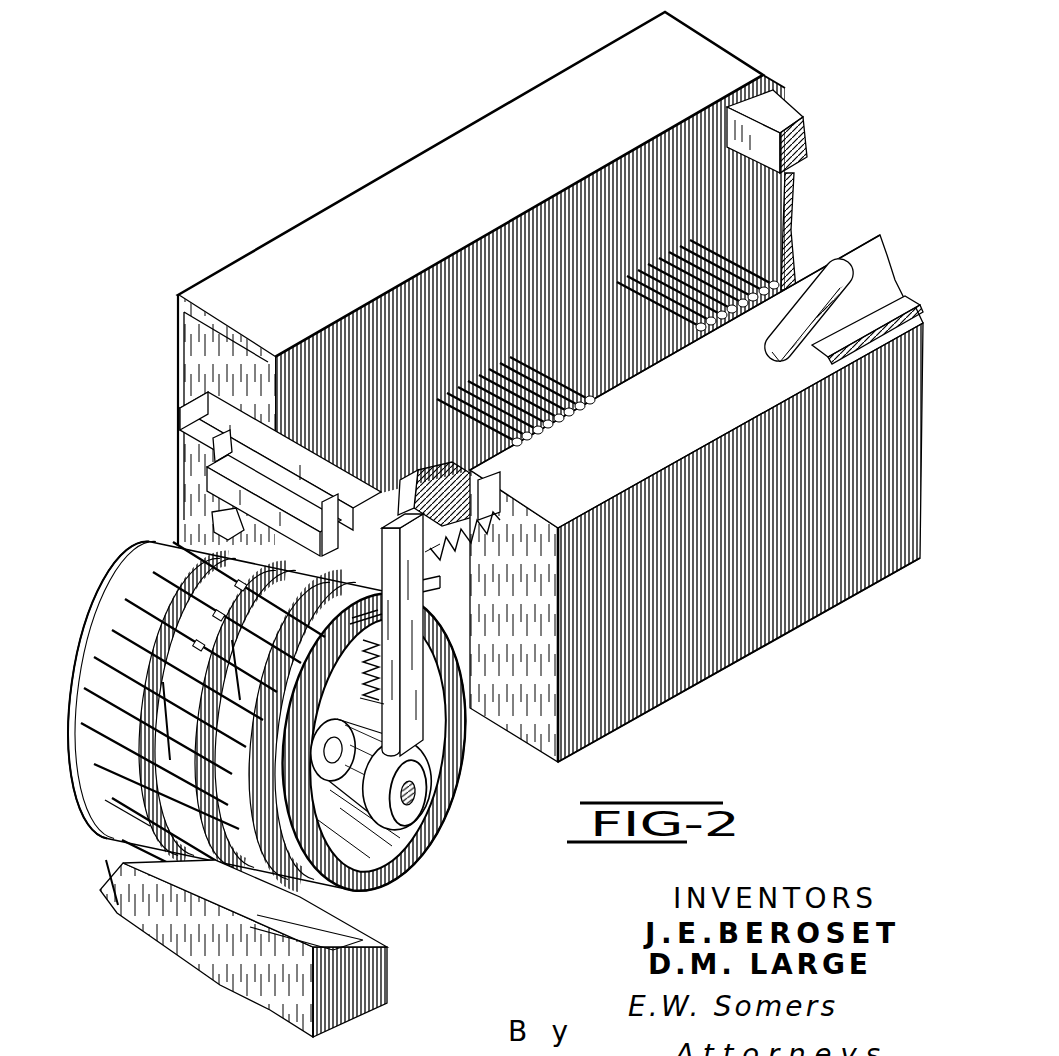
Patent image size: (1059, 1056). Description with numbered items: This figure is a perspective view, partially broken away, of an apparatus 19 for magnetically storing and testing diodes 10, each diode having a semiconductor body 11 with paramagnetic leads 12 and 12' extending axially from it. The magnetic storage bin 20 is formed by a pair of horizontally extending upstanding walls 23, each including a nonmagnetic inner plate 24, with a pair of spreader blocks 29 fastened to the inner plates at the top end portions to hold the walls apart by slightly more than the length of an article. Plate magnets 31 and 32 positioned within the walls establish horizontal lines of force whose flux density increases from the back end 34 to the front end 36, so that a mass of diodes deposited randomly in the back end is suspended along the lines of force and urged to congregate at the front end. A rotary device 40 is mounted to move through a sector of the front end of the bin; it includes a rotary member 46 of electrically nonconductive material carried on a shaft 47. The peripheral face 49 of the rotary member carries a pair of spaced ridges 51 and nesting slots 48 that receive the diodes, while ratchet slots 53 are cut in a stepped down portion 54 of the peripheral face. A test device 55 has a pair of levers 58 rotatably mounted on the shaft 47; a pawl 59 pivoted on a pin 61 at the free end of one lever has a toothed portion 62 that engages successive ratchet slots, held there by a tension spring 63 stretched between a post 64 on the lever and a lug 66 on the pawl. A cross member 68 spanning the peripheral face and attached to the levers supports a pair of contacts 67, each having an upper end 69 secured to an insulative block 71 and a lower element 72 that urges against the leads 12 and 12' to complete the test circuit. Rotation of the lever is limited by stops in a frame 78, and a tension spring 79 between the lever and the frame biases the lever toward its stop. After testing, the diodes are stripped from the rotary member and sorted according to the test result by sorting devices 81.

The diode 10 is at (640, 396).
The semiconductor body 11 is at (600, 392).
The paramagnetic lead 12 is at (197, 739).
The paramagnetic lead 12' is at (374, 458).
The apparatus 19 is at (556, 812).
The magnetic storage bin 20 is at (770, 650).
The upstanding walls 23 is at (436, 148).
The inner plate 24 is at (472, 270).
The spreader block 29 is at (787, 118).
The plate magnet 31 is at (858, 292).
The outer plate magnet 32 is at (898, 300).
The back end 34 is at (838, 172).
The front end 36 is at (170, 374).
The rotary device 40 is at (280, 724).
The rotary member 46 is at (440, 844).
The shaft 47 is at (428, 814).
The nesting slots 48 is at (197, 706).
The peripheral face 49 is at (96, 768).
The spaced ridges 51 is at (110, 816).
The ratchet slots 53 is at (362, 900).
The stepped down portion 54 is at (108, 618).
The test device 55 is at (434, 762).
The levers 58 is at (178, 504).
The pawl 59 is at (336, 628).
The pin 61 is at (442, 584).
The toothed portion 62 is at (380, 660).
The tension spring 63 is at (320, 676).
The post 64 is at (384, 690).
The lug 66 is at (376, 626).
The contacts 67 is at (263, 468).
The cross member 68 is at (253, 420).
The upper end 69 is at (326, 508).
The block 71 is at (212, 466).
The lower element 72 is at (212, 524).
The frame 78 is at (500, 492).
The tension spring 79 is at (478, 538).
The sorting devices 81 is at (285, 1008).